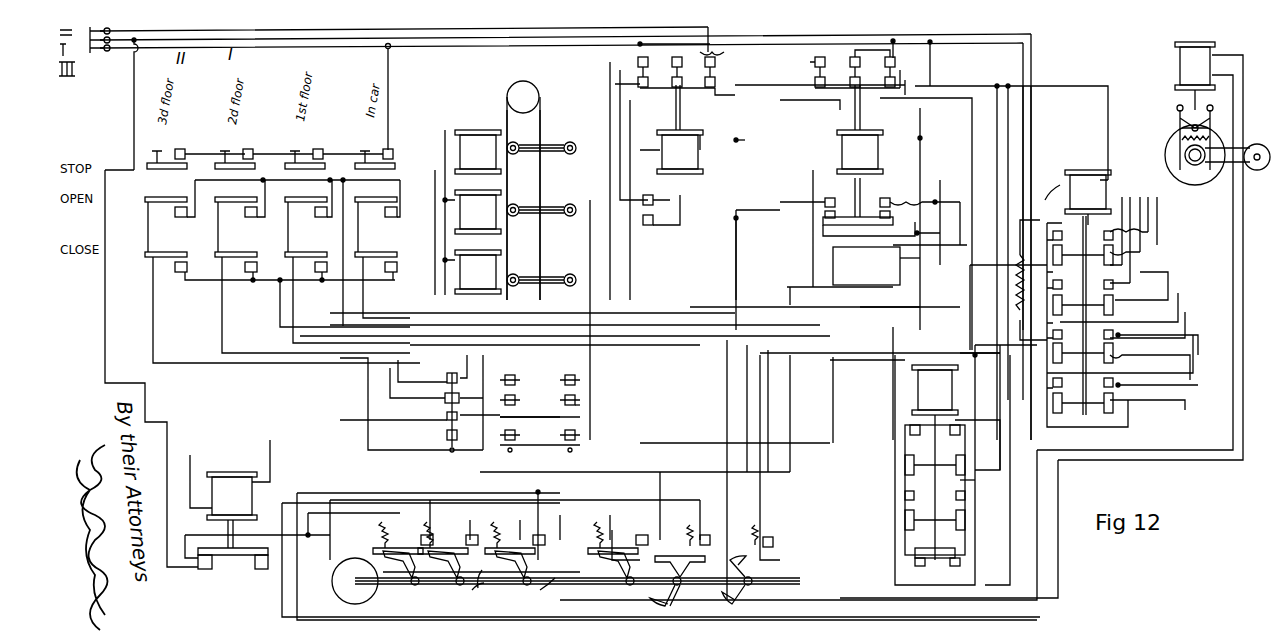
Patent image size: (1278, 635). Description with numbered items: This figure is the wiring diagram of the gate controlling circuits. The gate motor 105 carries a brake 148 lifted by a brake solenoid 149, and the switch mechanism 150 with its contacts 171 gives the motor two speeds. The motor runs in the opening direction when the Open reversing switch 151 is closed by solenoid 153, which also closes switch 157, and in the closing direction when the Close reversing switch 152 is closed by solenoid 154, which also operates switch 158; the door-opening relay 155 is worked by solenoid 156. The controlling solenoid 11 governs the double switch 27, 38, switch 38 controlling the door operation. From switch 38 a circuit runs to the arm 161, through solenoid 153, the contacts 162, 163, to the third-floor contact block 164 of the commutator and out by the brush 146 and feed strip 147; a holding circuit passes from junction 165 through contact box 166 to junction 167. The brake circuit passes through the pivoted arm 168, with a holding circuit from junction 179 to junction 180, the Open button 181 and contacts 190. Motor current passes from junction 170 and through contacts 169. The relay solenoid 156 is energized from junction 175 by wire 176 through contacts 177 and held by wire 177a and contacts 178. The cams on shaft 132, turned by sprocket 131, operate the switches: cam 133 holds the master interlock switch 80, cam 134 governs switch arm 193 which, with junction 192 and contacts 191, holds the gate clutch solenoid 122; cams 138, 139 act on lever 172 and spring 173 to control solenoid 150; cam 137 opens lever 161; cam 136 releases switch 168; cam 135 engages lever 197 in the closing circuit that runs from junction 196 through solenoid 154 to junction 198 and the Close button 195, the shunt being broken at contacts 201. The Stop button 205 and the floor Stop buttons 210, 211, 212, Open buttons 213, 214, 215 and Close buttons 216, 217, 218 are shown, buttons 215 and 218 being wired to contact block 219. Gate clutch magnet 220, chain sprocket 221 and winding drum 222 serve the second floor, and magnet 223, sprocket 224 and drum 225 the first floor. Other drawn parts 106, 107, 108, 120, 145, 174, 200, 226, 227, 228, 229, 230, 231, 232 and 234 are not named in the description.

The controlling solenoid 11 is at (232, 485).
The switch 27 is at (257, 568).
The switch 38 is at (212, 568).
The master interlock switch 80 is at (410, 552).
The gate motor 105 is at (1190, 188).
The pulley 106 is at (540, 97).
The belt 107 is at (542, 114).
The contact 108 is at (586, 136).
The contact arm 120 is at (515, 155).
The gate clutch solenoid 122 is at (493, 118).
The sprocket 131 is at (350, 602).
The shaft 132 is at (551, 591).
The cam 133 is at (410, 585).
The cam 134 is at (456, 585).
The cam 135 is at (505, 586).
The cam 136 is at (625, 575).
The cam 137 is at (662, 598).
The cam 138 is at (740, 590).
The cam 139 is at (745, 565).
The armature 145 is at (470, 425).
The brush 146 is at (445, 430).
The feed strip 147 is at (580, 416).
The brake 148 is at (1180, 127).
The brake solenoid 149 is at (1180, 68).
The two-speed switch mechanism 150 is at (1088, 180).
The Open reversing switch 151 is at (857, 69).
The Close reversing switch 152 is at (710, 66).
The solenoid 153 is at (850, 148).
The solenoid 154 is at (672, 148).
The automatic relay 155 is at (913, 490).
The relay solenoid 156 is at (935, 462).
The switch 157 is at (893, 245).
The switch 158 is at (673, 217).
The switch arm 161 is at (682, 551).
The switch contact 162 is at (960, 563).
The switch contact 163 is at (925, 565).
The third floor contact block 164 is at (447, 436).
The junction 165 is at (920, 138).
The contact box 166 is at (825, 80).
The junction 167 is at (970, 353).
The pivoted arm 168 is at (626, 536).
The contacts 169 is at (905, 85).
The junction 170 is at (1012, 88).
The two-speed switch contacts 171 is at (1080, 413).
The switch lever 172 is at (752, 540).
The spring 173 is at (760, 524).
The conductor 174 is at (820, 100).
The junction 175 is at (988, 83).
The wire 176 is at (998, 455).
The switch contacts 177 is at (965, 492).
The wire 177a is at (1020, 250).
The switch contacts 178 is at (968, 428).
The junction 179 is at (612, 530).
The junction 180 is at (915, 238).
The Open button 181 is at (377, 217).
The contacts 190 is at (826, 214).
The contacts 191 is at (906, 190).
The junction 192 is at (935, 202).
The switch arm 193 is at (468, 525).
The Close button 195 is at (378, 262).
The junction 196 is at (540, 495).
The switch lever 197 is at (528, 545).
The junction 198 is at (754, 140).
The contact 200 is at (447, 378).
The contacts 201 is at (676, 100).
The Stop button 205 is at (375, 152).
The Stop button 210 is at (320, 134).
The Stop button 211 is at (250, 134).
The Stop button 212 is at (185, 134).
The Open button 213 is at (308, 217).
The Open button 214 is at (243, 217).
The Open button 215 is at (167, 217).
The Close button 216 is at (305, 262).
The Close button 217 is at (240, 262).
The Close button 218 is at (165, 262).
The contact block 219 is at (448, 398).
The gate clutch magnet 220 is at (494, 188).
The chain sprocket 221 is at (515, 217).
The gate cable winding drum 222 is at (586, 190).
The gate clutch magnet 223 is at (494, 251).
The chain sprocket 224 is at (516, 287).
The gate cable winding drum 225 is at (586, 257).
The contact 226 is at (580, 399).
The contact 227 is at (515, 399).
The contact 228 is at (580, 434).
The contact 229 is at (515, 433).
The resistor 230 is at (1022, 304).
The conductor 231 is at (728, 222).
The conductor 232 is at (700, 55).
The conductor 234 is at (908, 92).